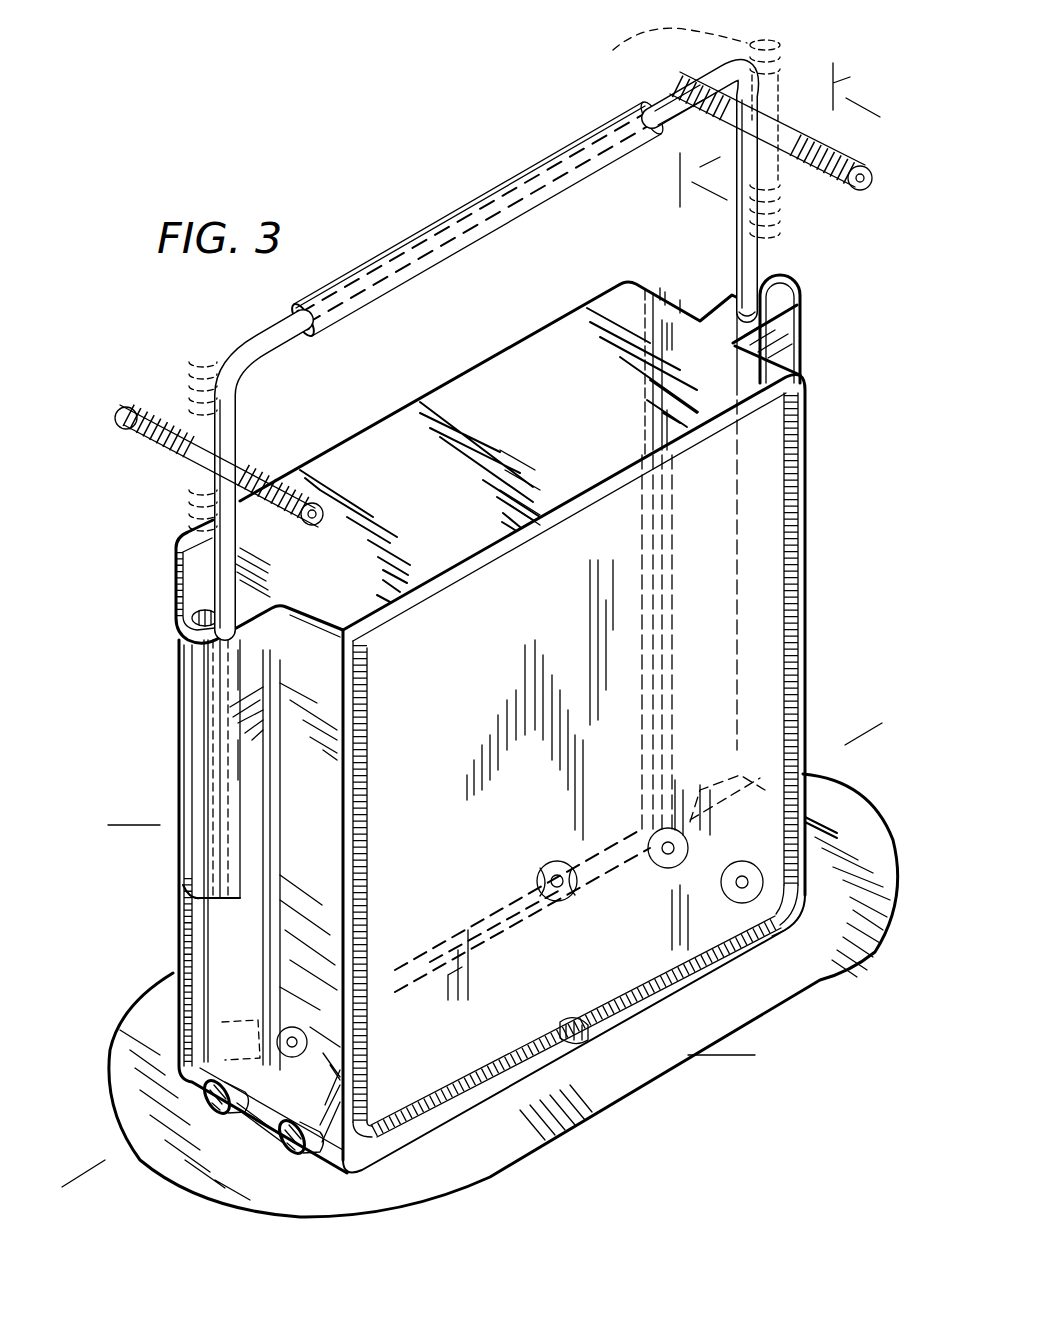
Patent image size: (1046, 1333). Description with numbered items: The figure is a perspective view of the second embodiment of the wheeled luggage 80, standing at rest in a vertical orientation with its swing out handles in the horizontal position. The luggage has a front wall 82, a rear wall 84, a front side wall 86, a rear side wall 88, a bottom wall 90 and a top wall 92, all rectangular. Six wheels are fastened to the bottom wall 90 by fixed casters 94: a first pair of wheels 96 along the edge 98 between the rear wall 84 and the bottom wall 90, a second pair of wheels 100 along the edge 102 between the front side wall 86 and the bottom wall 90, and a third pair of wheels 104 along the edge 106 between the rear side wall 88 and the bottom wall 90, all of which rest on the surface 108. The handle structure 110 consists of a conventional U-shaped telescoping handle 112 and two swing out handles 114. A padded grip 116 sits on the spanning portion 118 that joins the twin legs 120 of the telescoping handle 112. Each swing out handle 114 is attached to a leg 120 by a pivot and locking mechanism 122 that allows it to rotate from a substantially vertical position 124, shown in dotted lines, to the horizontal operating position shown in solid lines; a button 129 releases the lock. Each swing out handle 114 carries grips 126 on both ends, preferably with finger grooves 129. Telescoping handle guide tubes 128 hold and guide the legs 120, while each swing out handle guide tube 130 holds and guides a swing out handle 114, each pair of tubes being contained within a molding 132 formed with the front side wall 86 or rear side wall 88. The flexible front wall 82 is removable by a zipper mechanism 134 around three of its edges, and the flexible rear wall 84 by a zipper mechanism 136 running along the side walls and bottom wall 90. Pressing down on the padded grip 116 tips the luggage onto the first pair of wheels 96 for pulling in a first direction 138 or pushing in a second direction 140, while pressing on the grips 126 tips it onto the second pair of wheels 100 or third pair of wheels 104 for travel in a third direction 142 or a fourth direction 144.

The wheeled luggage 80 is at (487, 717).
The front wall 82 is at (563, 522).
The rear wall 84 is at (313, 462).
The front side wall 86 is at (313, 667).
The rear side wall 88 is at (668, 290).
The bottom wall 90 is at (316, 1150).
The top wall 92 is at (320, 593).
The fixed casters 94 is at (648, 878).
The first pair of wheels 96 is at (370, 1018).
The edge 98 is at (188, 1020).
The second pair of wheels 100 is at (200, 1093).
The edge 102 is at (268, 1135).
The third pair of wheels 104 is at (696, 890).
The edge 106 is at (688, 798).
The surface 108 is at (790, 990).
The handle structure 110 is at (499, 315).
The U-shaped telescoping handle 112 is at (640, 90).
The swing out handle 114 is at (812, 192).
The padded grip 116 is at (456, 214).
The spanning portion 118 is at (247, 337).
The legs 120 is at (763, 243).
The pivot and locking mechanism 122 is at (796, 108).
The substantially vertical position 124 is at (659, 47).
The grips 126 is at (858, 190).
The telescoping handle guide tubes 128 is at (803, 322).
The button / finger grooves 129 is at (152, 445).
The swing out handle guide tube 130 is at (177, 688).
The molding 132 is at (203, 598).
The zipper mechanism 134 is at (800, 908).
The zipper mechanism 136 is at (185, 608).
The first direction 138 is at (133, 822).
The second direction 140 is at (732, 1058).
The third direction 142 is at (866, 745).
The fourth direction 144 is at (76, 1159).